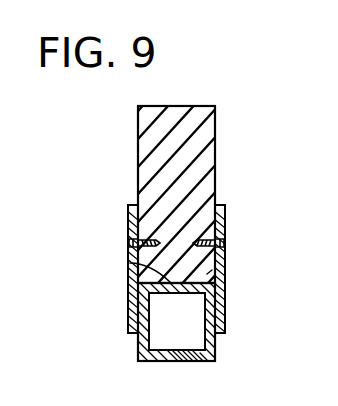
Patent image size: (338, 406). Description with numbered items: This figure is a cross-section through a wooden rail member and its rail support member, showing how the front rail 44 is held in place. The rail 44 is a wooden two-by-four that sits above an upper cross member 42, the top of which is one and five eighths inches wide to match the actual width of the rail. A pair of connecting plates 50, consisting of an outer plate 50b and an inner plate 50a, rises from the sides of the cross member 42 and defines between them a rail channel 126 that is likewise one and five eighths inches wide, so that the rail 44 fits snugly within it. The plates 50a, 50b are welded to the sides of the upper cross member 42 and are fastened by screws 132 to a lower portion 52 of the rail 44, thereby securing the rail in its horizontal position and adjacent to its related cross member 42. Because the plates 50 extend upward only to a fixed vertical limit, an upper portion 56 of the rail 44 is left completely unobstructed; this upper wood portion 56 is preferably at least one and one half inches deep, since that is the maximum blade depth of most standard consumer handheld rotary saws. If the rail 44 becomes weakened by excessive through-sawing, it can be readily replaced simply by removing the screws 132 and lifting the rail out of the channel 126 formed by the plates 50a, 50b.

The front rail 44 is at (143, 140).
The upper portion 56 is at (151, 162).
The connecting plates 50 is at (128, 211).
The inner plate 50a is at (224, 228).
The outer plate 50b is at (133, 222).
The screws 132 is at (132, 247).
The rail channel 126 is at (130, 263).
The lower portion 52 is at (212, 270).
The upper cross member 42 is at (214, 348).